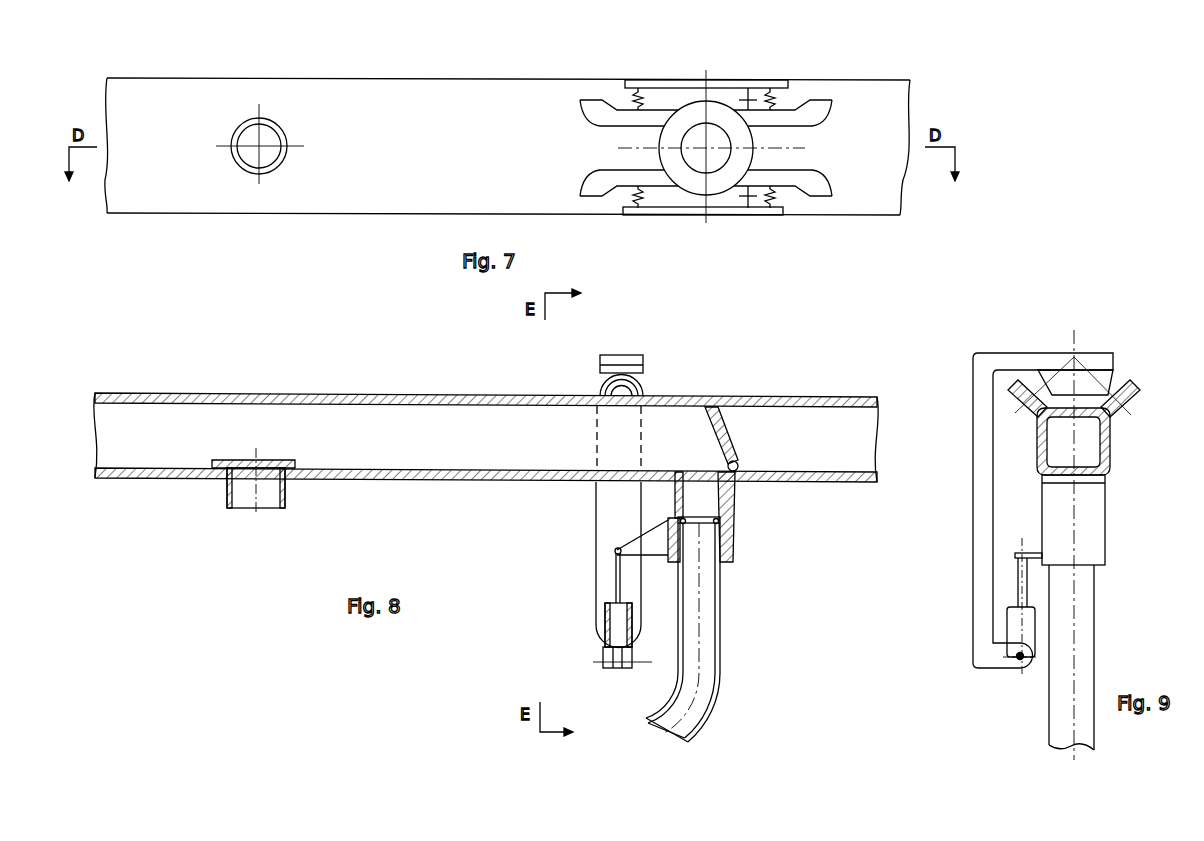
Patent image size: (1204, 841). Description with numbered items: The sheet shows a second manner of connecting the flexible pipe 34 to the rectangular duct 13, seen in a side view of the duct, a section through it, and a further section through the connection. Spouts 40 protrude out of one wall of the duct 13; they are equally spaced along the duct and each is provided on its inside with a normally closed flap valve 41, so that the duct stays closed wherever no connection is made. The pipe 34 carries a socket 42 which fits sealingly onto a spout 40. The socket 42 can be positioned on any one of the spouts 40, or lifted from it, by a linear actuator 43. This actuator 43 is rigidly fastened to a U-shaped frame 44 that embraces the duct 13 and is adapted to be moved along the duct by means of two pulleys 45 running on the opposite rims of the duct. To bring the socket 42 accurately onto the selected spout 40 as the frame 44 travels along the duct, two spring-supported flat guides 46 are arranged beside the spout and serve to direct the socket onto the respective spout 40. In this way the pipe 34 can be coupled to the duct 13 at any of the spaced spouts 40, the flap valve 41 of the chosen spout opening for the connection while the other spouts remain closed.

In FIG. 7, the rectangular duct 13 is at (850, 90).
In FIG. 8, the rectangular duct 13 is at (457, 479).
In FIG. 9, the rectangular duct 13 is at (1105, 467).
In FIG. 8, the flexible pipe 34 is at (722, 652).
In FIG. 9, the flexible pipe 34 is at (1060, 693).
In FIG. 7, the spout 40 is at (252, 170).
In FIG. 8, the spout 40 is at (280, 506).
In FIG. 8, the flap valve 41 is at (257, 453).
In FIG. 8, the socket 42 is at (735, 549).
In FIG. 9, the socket 42 is at (1097, 535).
In FIG. 9, the linear actuator 43 is at (1015, 630).
In FIG. 8, the U-shaped frame 44 is at (613, 508).
In FIG. 9, the U-shaped frame 44 is at (980, 610).
In FIG. 8, the pulley 45 is at (647, 387).
In FIG. 9, the pulley 45 is at (1123, 410).
In FIG. 7, the spring-supported flat guide 46 is at (617, 120).